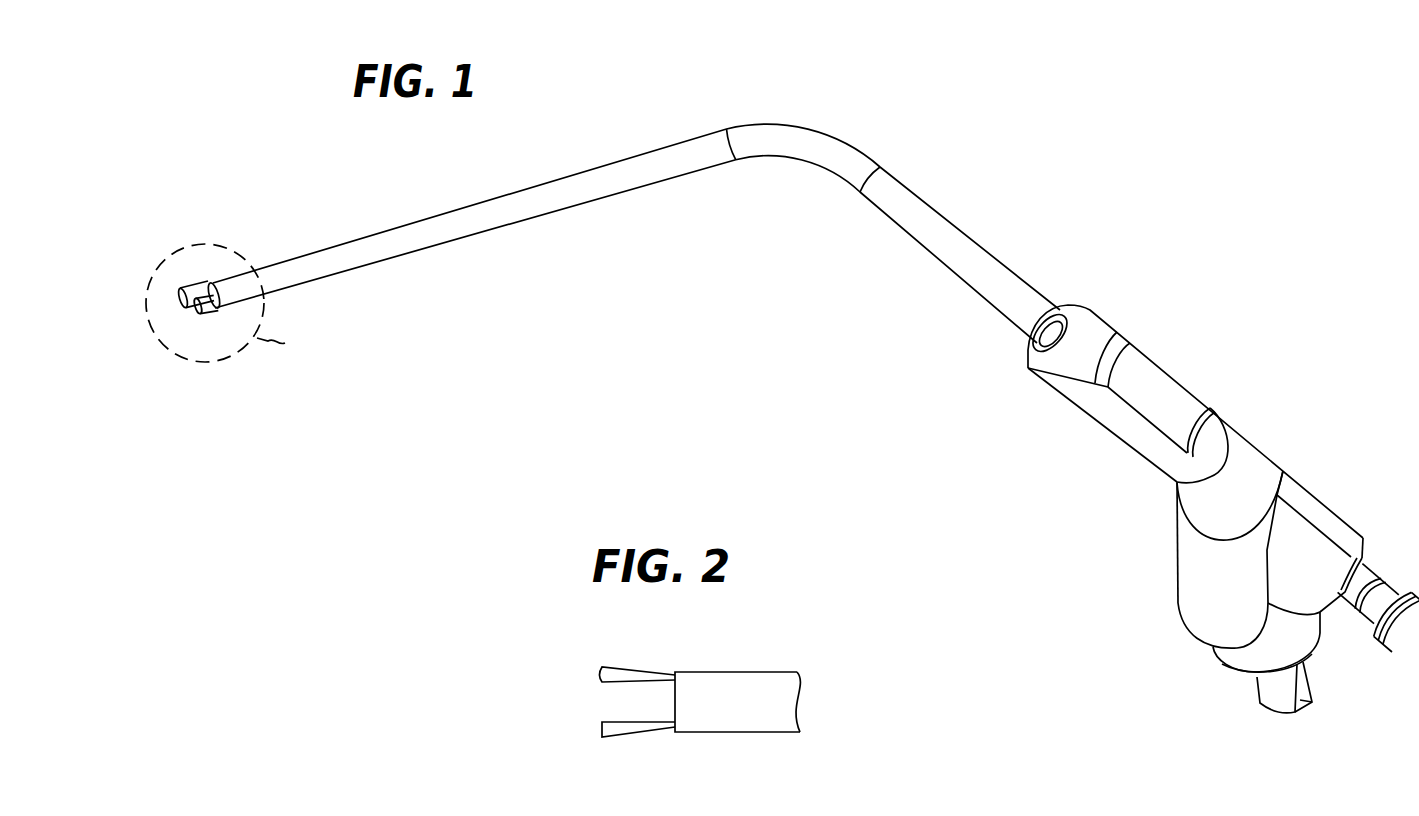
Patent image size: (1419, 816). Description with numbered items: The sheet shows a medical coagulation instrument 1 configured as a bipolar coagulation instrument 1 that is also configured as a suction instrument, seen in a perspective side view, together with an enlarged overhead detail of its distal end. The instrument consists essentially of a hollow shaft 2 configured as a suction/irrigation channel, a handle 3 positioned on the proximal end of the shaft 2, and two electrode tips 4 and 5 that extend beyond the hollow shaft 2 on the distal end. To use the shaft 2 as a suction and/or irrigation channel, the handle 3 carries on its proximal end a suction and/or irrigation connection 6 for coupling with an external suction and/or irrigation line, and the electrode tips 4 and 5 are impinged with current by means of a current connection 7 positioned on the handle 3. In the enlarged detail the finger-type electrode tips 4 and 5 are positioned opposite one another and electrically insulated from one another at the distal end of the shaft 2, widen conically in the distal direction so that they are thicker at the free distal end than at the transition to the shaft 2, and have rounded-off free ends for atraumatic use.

In FIG. 1, the medical coagulation instrument 1 is at (897, 133).
In FIG. 1, the hollow shaft 2 is at (465, 211).
In FIG. 2, the hollow shaft 2 is at (782, 678).
In FIG. 1, the handle 3 is at (1128, 308).
In FIG. 1, the electrode tip 4 is at (212, 310).
In FIG. 2, the electrode tip 4 is at (610, 730).
In FIG. 1, the electrode tip 5 is at (186, 284).
In FIG. 2, the electrode tip 5 is at (622, 670).
In FIG. 1, the suction and/or irrigation connection 6 is at (1383, 593).
In FIG. 1, the current connection 7 is at (1273, 700).